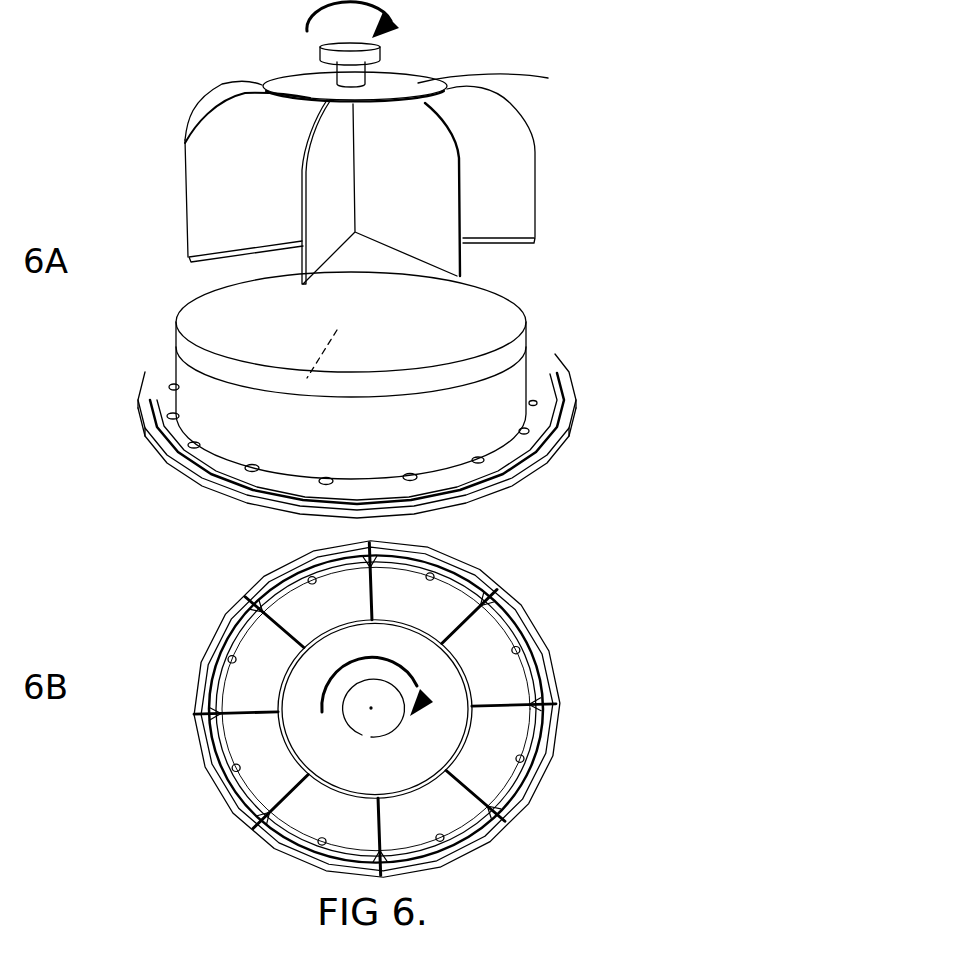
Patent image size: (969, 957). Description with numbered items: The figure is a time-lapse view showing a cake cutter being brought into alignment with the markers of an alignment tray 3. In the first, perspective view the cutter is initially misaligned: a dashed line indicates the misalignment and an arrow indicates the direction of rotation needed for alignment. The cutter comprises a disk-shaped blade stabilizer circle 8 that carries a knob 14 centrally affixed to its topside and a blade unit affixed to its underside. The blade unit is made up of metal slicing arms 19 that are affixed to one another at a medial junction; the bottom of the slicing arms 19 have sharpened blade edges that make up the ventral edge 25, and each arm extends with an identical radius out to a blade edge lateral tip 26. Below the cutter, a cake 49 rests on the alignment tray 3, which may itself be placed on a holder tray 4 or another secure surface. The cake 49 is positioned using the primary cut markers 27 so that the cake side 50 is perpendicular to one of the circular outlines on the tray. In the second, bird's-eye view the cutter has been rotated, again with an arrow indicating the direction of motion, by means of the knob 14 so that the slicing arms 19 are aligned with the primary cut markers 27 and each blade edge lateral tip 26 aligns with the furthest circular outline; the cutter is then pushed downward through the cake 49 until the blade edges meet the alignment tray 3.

In FIG. 6A, the knob 14 is at (381, 46).
In FIG. 6B, the knob 14 is at (362, 725).
In FIG. 6A, the slicing arms 19 is at (521, 223).
In FIG. 6B, the slicing arms 19 is at (459, 615).
In FIG. 6A, the ventral edge 25 is at (522, 242).
In FIG. 6A, the blade edge lateral tip 26 is at (188, 256).
In FIG. 6A, the cake 49 is at (493, 332).
In FIG. 6B, the cake 49 is at (500, 673).
In FIG. 6A, the cake side 50 is at (515, 389).
In FIG. 6A, the primary cut markers 27 is at (520, 428).
In FIG. 6B, the primary cut markers 27 is at (222, 712).
In FIG. 6A, the alignment tray 3 is at (536, 418).
In FIG. 6B, the alignment tray 3 is at (452, 842).
In FIG. 6B, the holder tray 4 is at (220, 633).
In FIG. 6B, the blade stabilizer circle 8 is at (440, 738).